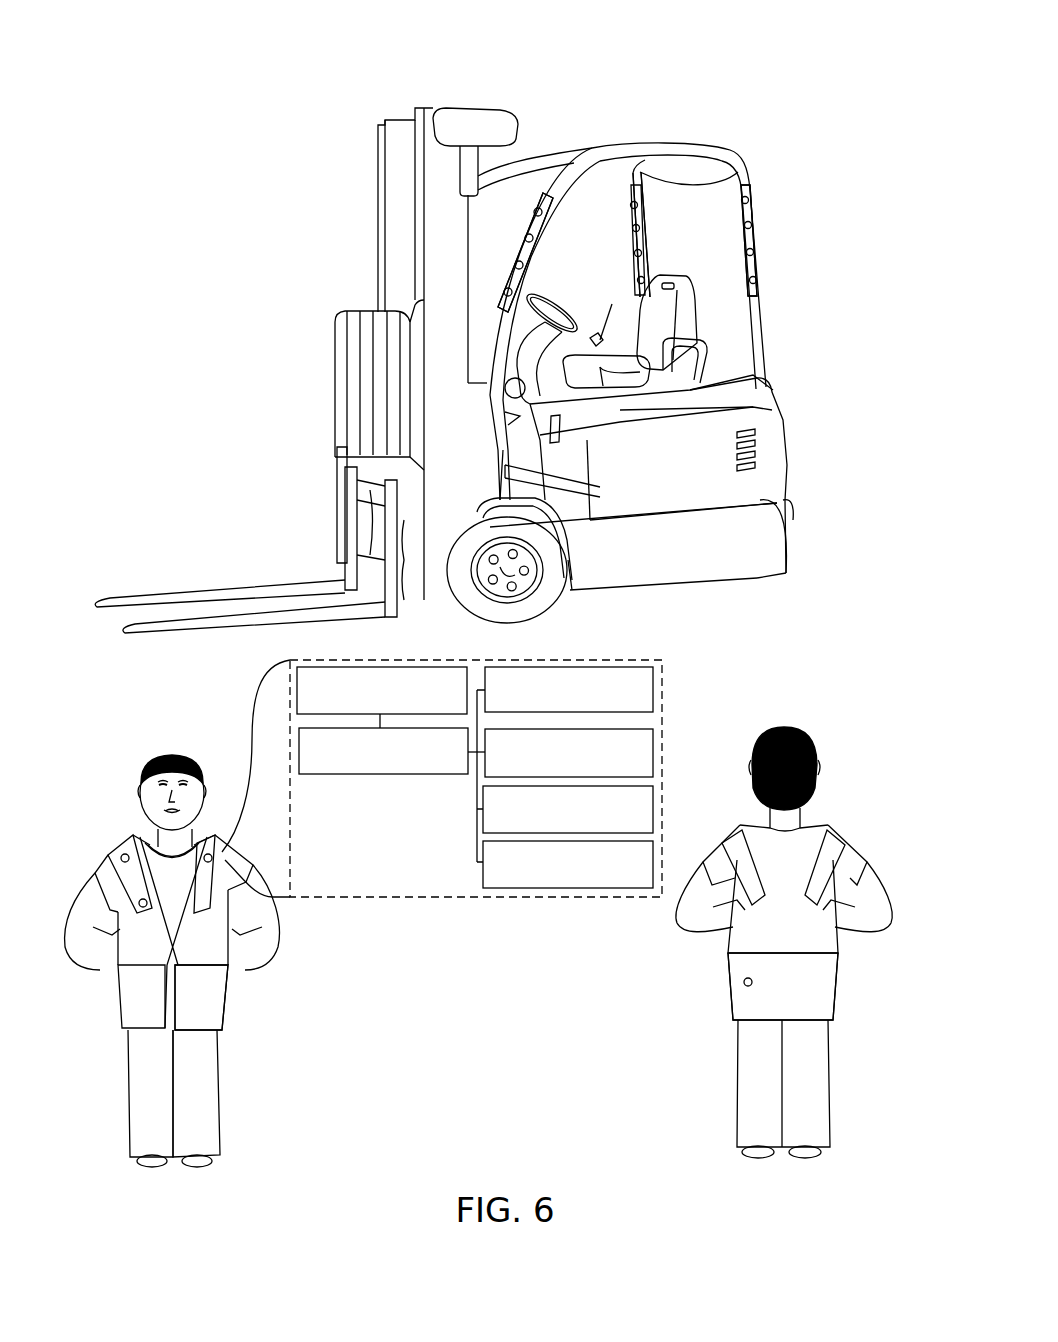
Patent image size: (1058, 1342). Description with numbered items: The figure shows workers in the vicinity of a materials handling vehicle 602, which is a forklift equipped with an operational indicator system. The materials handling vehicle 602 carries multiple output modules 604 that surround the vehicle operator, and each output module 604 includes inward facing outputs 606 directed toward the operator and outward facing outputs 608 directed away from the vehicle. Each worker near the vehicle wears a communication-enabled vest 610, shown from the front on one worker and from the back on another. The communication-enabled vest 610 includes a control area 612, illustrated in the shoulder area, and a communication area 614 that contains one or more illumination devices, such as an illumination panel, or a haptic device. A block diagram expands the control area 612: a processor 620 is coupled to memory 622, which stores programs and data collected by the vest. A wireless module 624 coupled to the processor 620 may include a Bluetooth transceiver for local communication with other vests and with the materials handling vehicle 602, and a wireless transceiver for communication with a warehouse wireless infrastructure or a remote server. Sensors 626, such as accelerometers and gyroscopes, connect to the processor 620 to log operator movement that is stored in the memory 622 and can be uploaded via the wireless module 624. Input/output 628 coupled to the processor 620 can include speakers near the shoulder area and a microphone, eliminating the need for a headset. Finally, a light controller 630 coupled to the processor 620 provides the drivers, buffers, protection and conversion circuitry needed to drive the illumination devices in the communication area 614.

The materials handling vehicle 602 is at (285, 75).
The output module 604 is at (508, 242).
The inward facing output 606 is at (628, 213).
The outward facing output 608 is at (537, 253).
The communication-enabled vest 610 is at (85, 838).
The control area 612 is at (363, 898).
The communication area 614 is at (217, 1013).
The processor 620 is at (353, 777).
The memory 622 is at (397, 667).
The wireless module 624 is at (655, 688).
The sensors 626 is at (655, 752).
The input/output (I/O) 628 is at (655, 807).
The light controller 630 is at (587, 888).